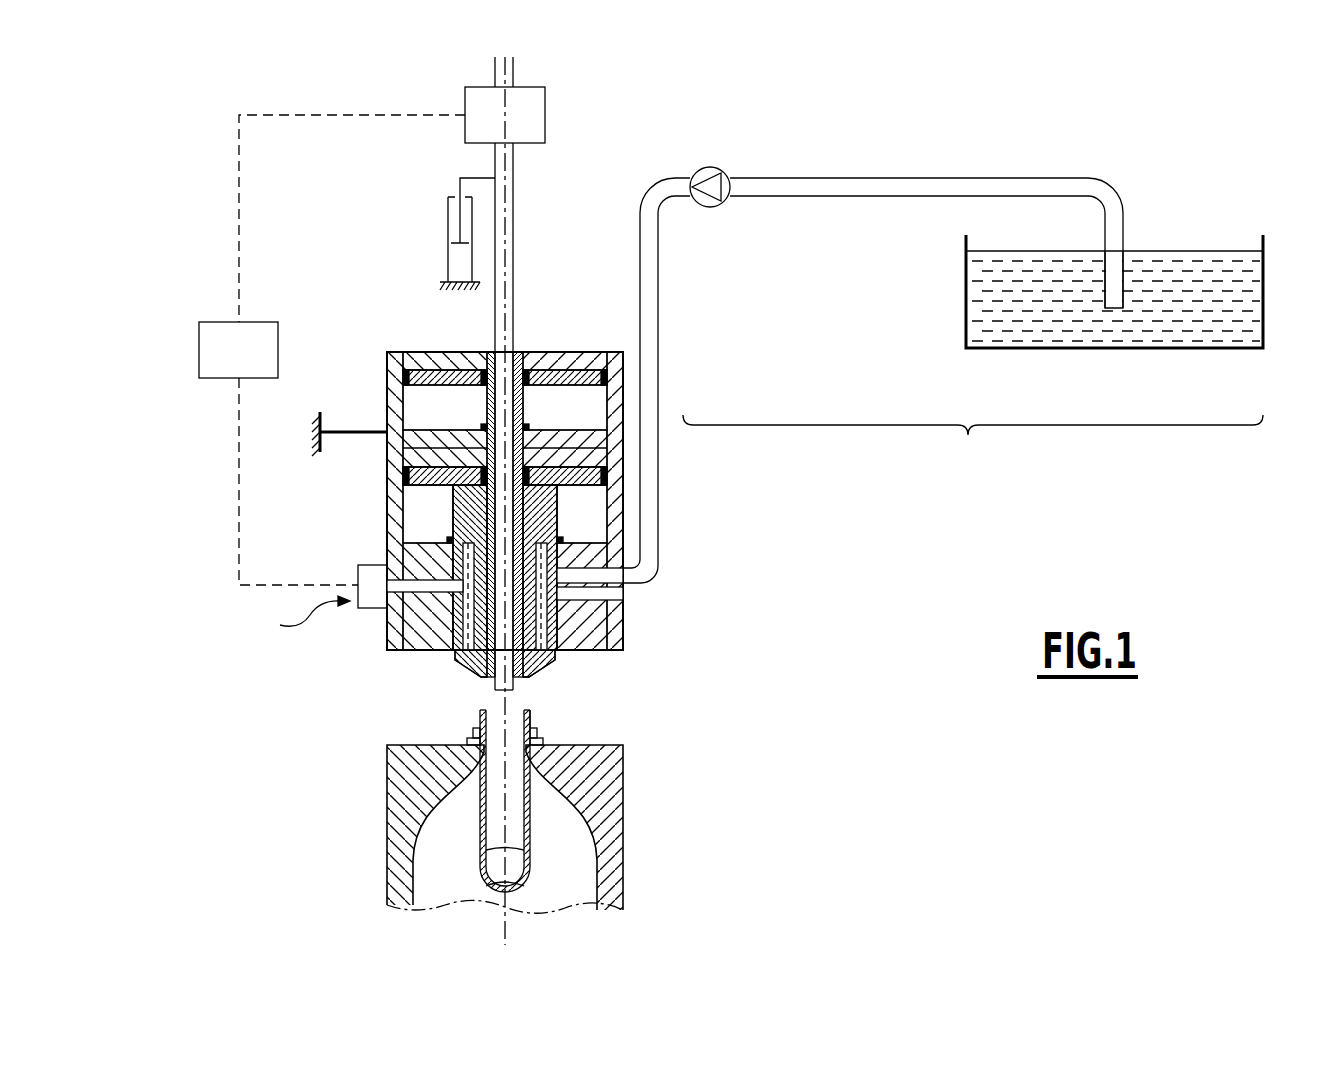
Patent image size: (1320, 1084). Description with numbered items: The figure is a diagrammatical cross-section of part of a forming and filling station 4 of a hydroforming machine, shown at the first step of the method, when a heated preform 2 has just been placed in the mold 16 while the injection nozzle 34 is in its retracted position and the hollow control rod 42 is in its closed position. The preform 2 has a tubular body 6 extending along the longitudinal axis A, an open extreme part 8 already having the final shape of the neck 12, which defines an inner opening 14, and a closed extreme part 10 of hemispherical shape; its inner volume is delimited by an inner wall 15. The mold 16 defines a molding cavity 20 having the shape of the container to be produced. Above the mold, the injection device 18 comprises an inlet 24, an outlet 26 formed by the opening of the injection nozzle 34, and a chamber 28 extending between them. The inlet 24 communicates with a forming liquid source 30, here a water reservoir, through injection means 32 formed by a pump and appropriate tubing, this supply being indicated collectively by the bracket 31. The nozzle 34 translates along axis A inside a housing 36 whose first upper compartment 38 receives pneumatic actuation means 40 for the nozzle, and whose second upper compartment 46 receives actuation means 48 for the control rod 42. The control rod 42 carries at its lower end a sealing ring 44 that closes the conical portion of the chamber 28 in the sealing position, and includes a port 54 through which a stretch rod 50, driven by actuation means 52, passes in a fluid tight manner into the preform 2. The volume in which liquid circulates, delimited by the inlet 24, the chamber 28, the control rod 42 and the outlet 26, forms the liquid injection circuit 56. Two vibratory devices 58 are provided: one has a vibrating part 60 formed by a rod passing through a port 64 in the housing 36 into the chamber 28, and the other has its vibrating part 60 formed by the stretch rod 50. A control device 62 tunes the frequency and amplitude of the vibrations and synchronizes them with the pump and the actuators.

The preform 2 is at (481, 820).
The forming and filling station 4 is at (303, 619).
The body 6 is at (582, 808).
The open extreme part 8 is at (529, 712).
The closed extreme part 10 is at (506, 893).
The neck 12 is at (533, 731).
The inner opening 14 is at (477, 716).
The inner wall 15 is at (523, 849).
The mold 16 is at (612, 857).
The injection device 18 is at (390, 470).
The molding cavity 20 is at (438, 874).
The inlet 24 is at (605, 593).
The outlet 26 is at (493, 680).
The chamber 28 is at (545, 628).
The forming liquid source 30 is at (1200, 330).
The liquid supply circuit 31 is at (973, 444).
The injection means 32 is at (712, 167).
The injection nozzle 34 is at (456, 657).
The housing 36 is at (590, 548).
The first upper compartment 38 is at (410, 505).
The actuation means 40 is at (575, 492).
The hollow control rod 42 is at (612, 574).
The sealing ring 44 is at (535, 672).
The second upper compartment 46 is at (412, 397).
The actuation means 48 is at (455, 364).
The stretch rod 50 is at (511, 181).
The actuation means 52 is at (457, 258).
The port 54 is at (497, 706).
The liquid injection circuit 56 is at (468, 600).
The vibratory device 58 is at (482, 102).
The vibrating part 60 is at (513, 277).
The control device 62 is at (199, 350).
The port 64 is at (442, 612).
The axis A is at (507, 230).